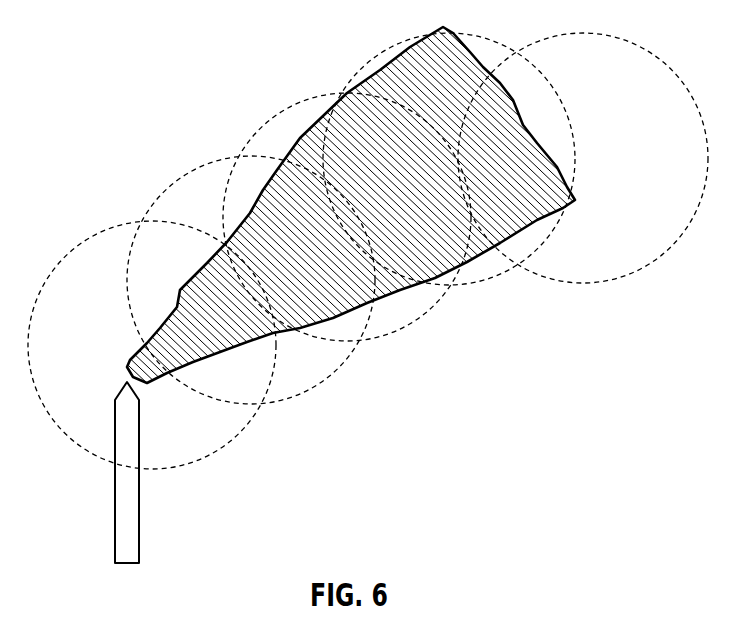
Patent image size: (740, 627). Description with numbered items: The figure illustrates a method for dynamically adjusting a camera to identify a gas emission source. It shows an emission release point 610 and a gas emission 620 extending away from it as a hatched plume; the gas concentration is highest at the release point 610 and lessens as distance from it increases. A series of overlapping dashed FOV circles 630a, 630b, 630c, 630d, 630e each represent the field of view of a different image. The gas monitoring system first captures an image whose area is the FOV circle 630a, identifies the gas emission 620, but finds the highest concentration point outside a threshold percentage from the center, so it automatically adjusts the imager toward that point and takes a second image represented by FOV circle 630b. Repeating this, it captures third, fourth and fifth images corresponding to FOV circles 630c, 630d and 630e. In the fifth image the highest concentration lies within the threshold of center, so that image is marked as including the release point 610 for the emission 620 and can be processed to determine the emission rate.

The emission release point 610 is at (124, 383).
The gas emission 620 is at (267, 228).
The FOV circle 630a is at (600, 282).
The FOV circle 630b is at (483, 282).
The FOV circle 630c is at (397, 331).
The FOV circle 630d is at (295, 397).
The FOV circle 630e is at (198, 461).